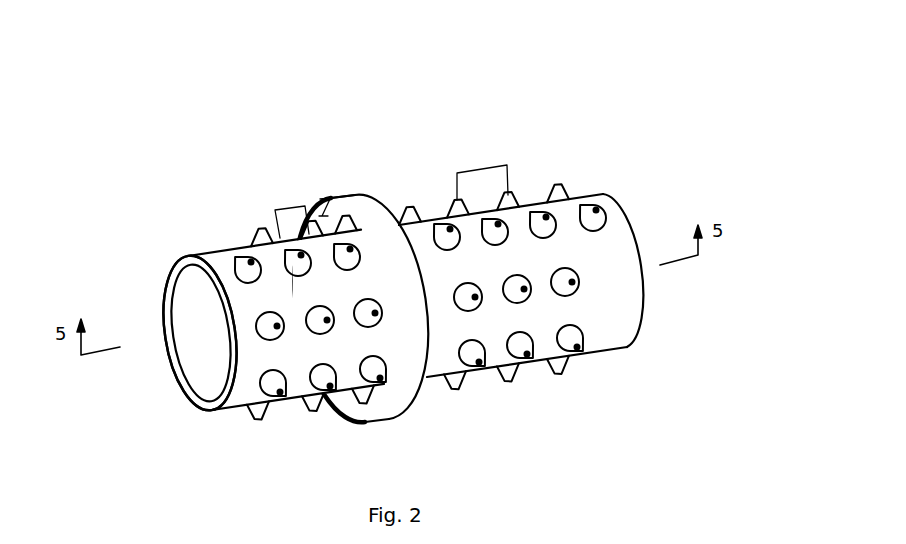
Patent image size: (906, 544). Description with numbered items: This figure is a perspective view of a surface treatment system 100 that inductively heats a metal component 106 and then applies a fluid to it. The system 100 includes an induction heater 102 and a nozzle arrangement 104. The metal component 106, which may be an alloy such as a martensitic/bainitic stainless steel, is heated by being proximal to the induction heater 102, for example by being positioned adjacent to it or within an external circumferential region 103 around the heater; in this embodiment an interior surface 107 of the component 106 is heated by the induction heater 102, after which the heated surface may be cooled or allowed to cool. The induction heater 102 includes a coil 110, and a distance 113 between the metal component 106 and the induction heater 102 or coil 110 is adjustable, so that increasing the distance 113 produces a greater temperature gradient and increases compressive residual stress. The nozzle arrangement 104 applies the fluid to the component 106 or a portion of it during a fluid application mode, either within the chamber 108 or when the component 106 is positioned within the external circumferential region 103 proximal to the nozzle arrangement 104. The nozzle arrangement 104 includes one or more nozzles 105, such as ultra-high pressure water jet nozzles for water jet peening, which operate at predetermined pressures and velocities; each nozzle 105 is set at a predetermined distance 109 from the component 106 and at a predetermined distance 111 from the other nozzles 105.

The system 100 is at (631, 92).
The induction heater 102 is at (620, 353).
The external circumferential region 103 is at (370, 408).
The nozzle arrangement 104 is at (539, 171).
The nozzles 105 is at (570, 191).
The metal component 106 is at (345, 191).
The interior surface 107 is at (322, 404).
The chamber 108 is at (205, 380).
The predetermined distance 109 is at (327, 198).
The coil 110 is at (173, 262).
The predetermined distance 111 is at (478, 165).
The distance 113 is at (272, 212).